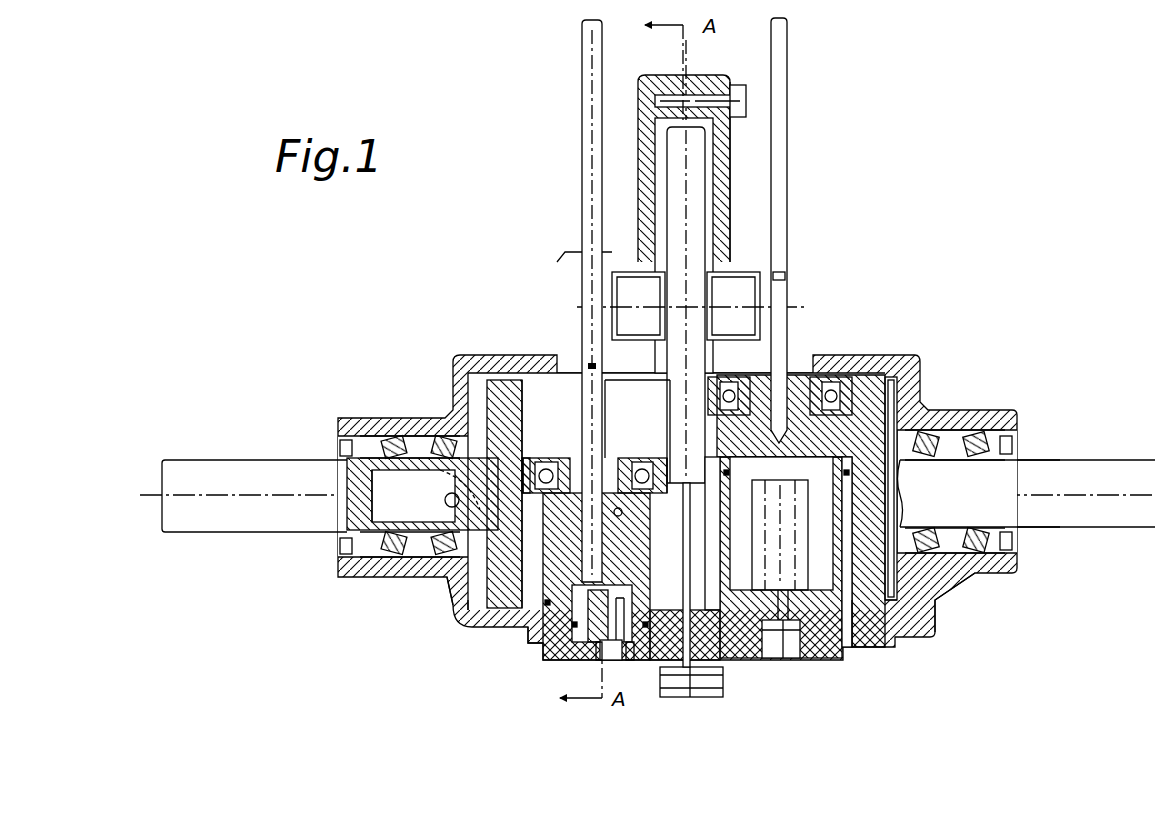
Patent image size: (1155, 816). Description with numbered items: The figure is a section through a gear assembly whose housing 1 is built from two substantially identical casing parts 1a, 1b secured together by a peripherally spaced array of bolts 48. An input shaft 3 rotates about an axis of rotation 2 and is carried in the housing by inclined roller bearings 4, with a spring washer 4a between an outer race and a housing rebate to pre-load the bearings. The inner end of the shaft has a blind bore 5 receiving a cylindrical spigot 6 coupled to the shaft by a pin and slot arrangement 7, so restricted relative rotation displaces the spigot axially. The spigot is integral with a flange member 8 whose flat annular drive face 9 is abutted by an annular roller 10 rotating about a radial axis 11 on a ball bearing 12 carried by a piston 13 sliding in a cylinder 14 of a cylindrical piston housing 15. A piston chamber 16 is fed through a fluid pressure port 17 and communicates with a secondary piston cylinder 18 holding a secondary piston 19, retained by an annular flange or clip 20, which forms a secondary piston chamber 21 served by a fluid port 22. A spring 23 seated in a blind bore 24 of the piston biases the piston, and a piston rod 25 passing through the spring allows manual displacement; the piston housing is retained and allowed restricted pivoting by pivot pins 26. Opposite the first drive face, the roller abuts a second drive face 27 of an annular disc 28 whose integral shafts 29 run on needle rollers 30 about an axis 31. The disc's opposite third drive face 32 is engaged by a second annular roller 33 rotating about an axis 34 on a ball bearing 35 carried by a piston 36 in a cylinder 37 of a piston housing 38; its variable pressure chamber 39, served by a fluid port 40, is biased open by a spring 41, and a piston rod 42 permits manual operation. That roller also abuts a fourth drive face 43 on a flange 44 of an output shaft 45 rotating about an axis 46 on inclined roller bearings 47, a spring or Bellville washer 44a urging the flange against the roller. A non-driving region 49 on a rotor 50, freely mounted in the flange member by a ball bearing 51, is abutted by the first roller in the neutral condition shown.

The housing 1 is at (487, 355).
The casing part 1a is at (636, 82).
The casing part 1b is at (733, 75).
The axis of rotation 2 is at (150, 500).
The input shaft 3 is at (250, 466).
The inclined roller bearings 4 is at (438, 438).
The spring washer 4a is at (395, 548).
The blind bore 5 is at (400, 532).
The cylindrical spigot 6 is at (372, 500).
The pin and slot arrangement 7 is at (440, 492).
The flange member 8 is at (466, 604).
The drive face 9 is at (514, 578).
The annular roller 10 is at (532, 462).
The axis 11 is at (590, 400).
The ball bearing 12 is at (553, 464).
The piston 13 is at (630, 540).
The cylinder 14 is at (636, 560).
The piston housing 15 is at (645, 585).
The piston chamber 16 is at (645, 605).
The fluid pressure port 17 is at (700, 668).
The secondary piston cylinder 18 is at (546, 632).
The secondary piston 19 is at (615, 645).
The annular flange or clip 20 is at (530, 636).
The secondary piston chamber 21 is at (566, 650).
The fluid port 22 is at (590, 650).
The spring 23 is at (580, 394).
The blind bore 24 is at (644, 520).
The piston rod 25 is at (590, 284).
The pivot pins 26 is at (632, 650).
The second drive face 27 is at (669, 400).
The annular disc 28 is at (698, 363).
The shafts 29 is at (628, 272).
The needle rollers 30 is at (636, 341).
The axis 31 is at (632, 308).
The third drive face 32 is at (712, 500).
The second annular roller 33 is at (838, 378).
The axis 34 is at (792, 650).
The ball bearing 35 is at (742, 392).
The piston 36 is at (898, 388).
The cylinder 37 is at (846, 656).
The piston housing 38 is at (724, 596).
The variable pressure chamber 39 is at (756, 574).
The fluid port 40 is at (776, 660).
The spring 41 is at (762, 550).
The piston rod 42 is at (786, 148).
The fourth drive face 43 is at (874, 636).
The flange 44 is at (878, 598).
The spring or Bellville washer 44a is at (920, 626).
The output shaft 45 is at (1048, 524).
The axis 46 is at (1105, 524).
The inclined roller bearings 47 is at (960, 572).
The bolts 48 is at (658, 98).
The non-driving region 49 is at (496, 575).
The rotor 50 is at (450, 586).
The ball bearing 51 is at (508, 460).